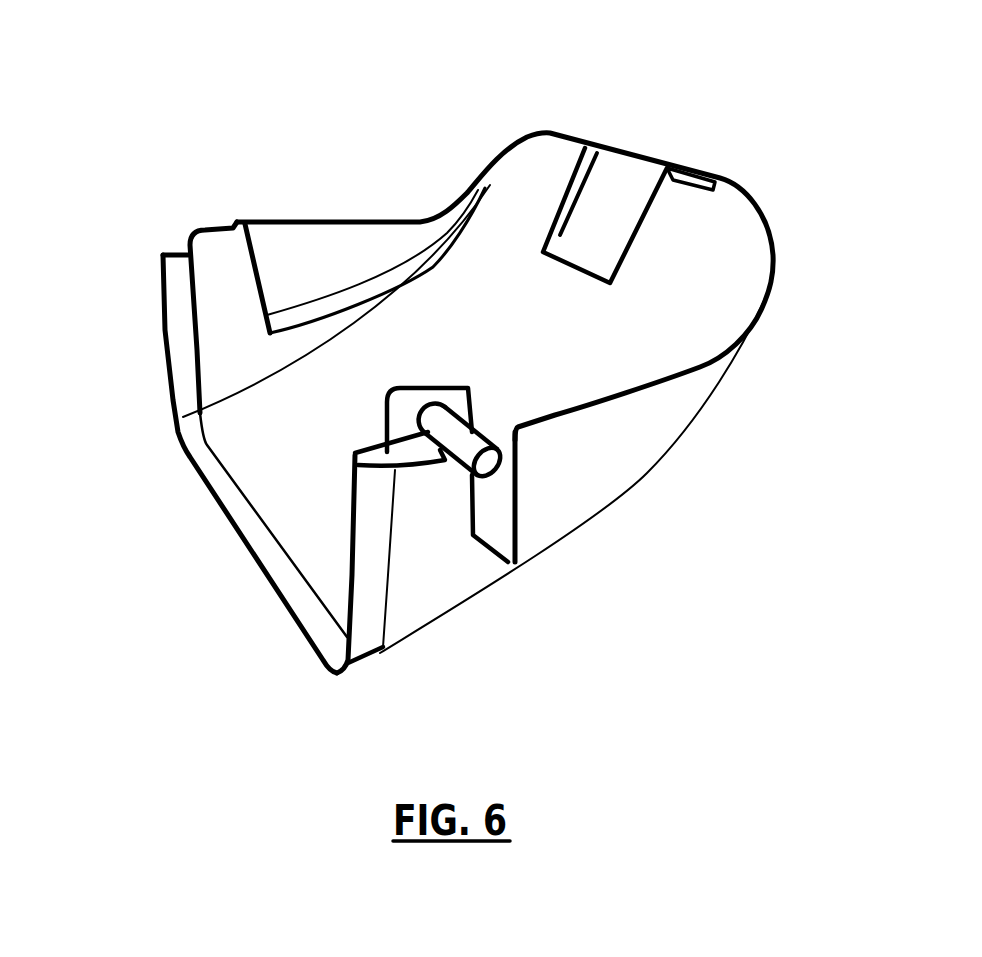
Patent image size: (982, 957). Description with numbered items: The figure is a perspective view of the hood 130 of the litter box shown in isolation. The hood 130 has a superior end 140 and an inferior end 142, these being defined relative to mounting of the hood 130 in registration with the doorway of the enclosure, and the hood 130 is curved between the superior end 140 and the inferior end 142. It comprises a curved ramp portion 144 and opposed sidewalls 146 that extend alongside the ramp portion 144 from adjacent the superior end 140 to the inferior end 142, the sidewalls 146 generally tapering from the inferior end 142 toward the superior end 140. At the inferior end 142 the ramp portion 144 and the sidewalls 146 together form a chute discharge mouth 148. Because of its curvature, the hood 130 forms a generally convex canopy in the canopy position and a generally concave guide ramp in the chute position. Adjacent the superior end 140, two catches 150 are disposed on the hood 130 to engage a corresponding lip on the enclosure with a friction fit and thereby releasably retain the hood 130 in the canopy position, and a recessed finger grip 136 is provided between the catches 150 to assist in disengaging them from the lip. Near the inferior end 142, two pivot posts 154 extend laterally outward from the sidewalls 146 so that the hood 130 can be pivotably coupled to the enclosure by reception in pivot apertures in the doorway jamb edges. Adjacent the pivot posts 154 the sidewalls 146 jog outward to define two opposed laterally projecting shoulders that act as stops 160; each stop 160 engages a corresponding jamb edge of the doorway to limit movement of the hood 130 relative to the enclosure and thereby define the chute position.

The hood 130 is at (158, 62).
The recessed finger grip 136 is at (613, 182).
The superior end 140 is at (753, 193).
The inferior end 142 is at (230, 535).
The curved ramp portion 144 is at (490, 330).
The sidewalls 146 is at (222, 255).
The chute discharge mouth 148 is at (177, 492).
The catches 150 is at (565, 137).
The pivot posts 154 is at (465, 440).
The stops 160 is at (490, 510).